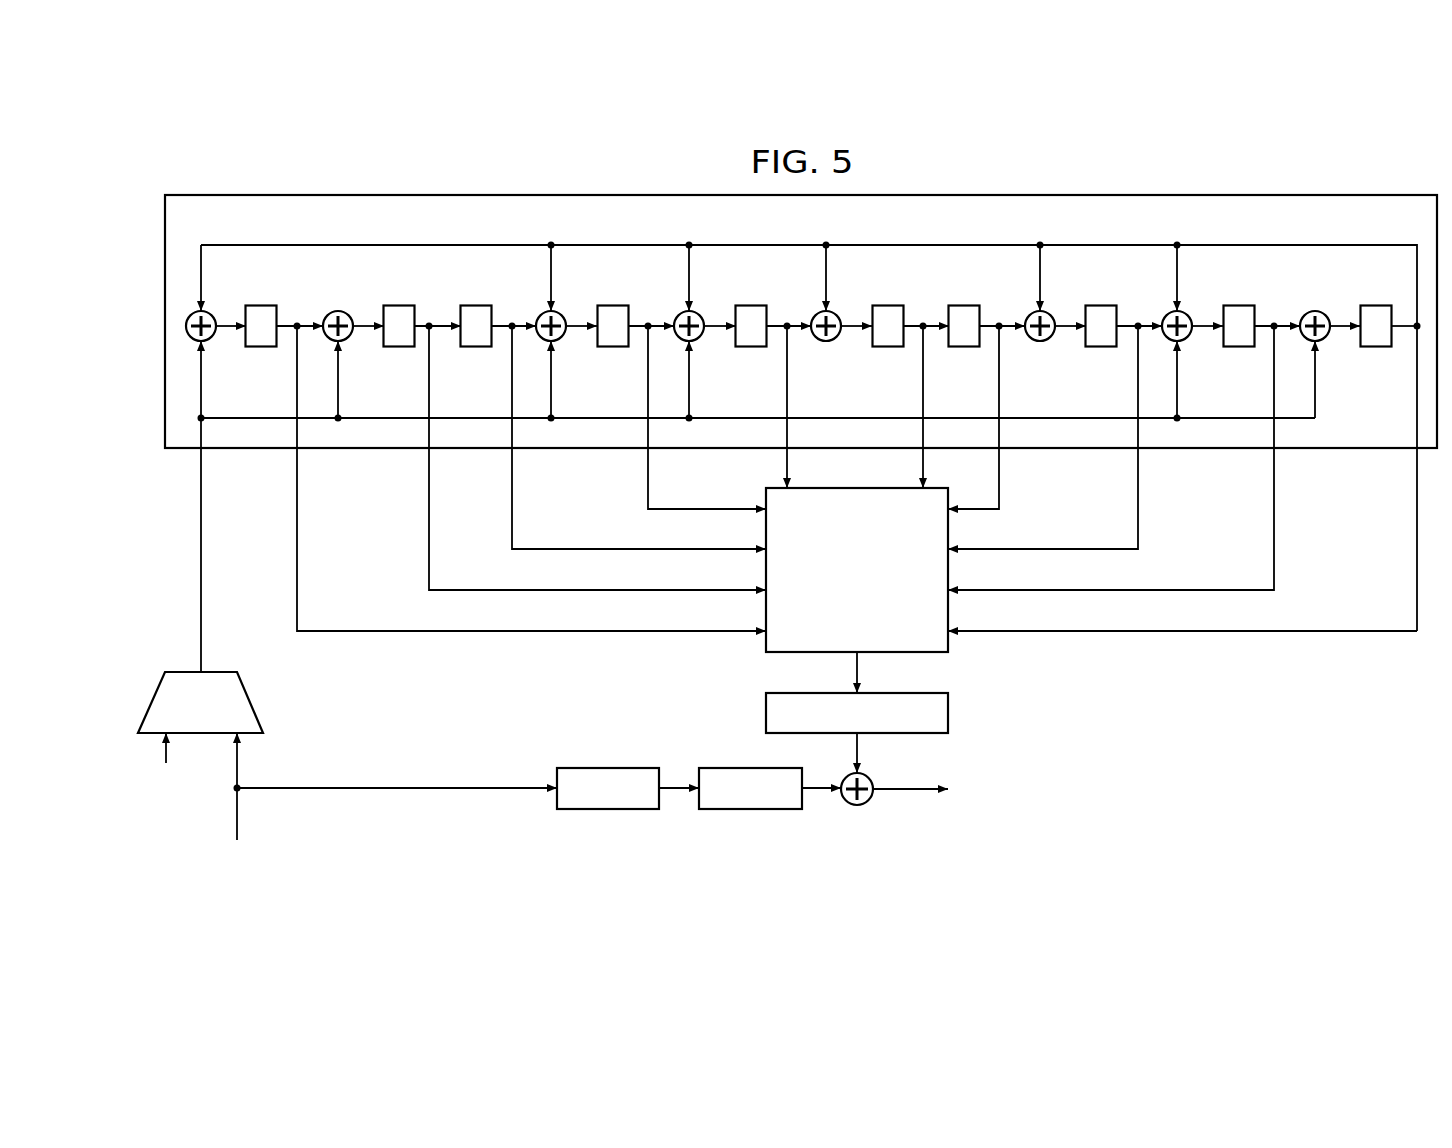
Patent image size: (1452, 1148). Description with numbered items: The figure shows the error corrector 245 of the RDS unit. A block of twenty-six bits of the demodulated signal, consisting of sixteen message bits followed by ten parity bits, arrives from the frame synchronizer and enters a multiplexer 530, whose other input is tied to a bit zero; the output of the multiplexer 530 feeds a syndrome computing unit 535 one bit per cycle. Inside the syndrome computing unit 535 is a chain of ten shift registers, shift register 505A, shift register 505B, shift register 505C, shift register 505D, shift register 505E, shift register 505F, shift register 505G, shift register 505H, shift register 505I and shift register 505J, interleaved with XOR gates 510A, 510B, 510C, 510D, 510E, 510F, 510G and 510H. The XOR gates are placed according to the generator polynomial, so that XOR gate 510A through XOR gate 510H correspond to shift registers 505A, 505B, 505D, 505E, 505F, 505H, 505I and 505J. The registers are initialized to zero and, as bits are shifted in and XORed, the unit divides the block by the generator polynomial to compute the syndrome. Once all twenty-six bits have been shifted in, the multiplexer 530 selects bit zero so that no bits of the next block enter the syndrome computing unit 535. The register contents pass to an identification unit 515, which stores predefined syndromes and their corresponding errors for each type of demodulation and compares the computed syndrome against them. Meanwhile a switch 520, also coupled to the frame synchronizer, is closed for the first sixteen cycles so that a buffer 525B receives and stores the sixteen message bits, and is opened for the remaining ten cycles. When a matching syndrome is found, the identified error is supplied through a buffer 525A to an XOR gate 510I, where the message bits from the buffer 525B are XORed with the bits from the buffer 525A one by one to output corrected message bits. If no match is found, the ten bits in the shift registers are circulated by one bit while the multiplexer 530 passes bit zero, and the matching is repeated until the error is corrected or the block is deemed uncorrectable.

The error corrector 245 is at (265, 172).
The syndrome computing unit 535 is at (1115, 193).
The XOR gate 510A is at (234, 298).
The XOR gate 510B is at (330, 314).
The XOR gate 510C is at (540, 314).
The XOR gate 510D is at (677, 314).
The XOR gate 510E is at (838, 314).
The XOR gate 510F is at (1080, 297).
The XOR gate 510G is at (1215, 297).
The XOR gate 510H is at (1357, 297).
The XOR gate 510I is at (868, 800).
The shift register 505A is at (261, 348).
The shift register 505B is at (399, 348).
The shift register 505C is at (476, 348).
The shift register 505D is at (613, 348).
The shift register 505E is at (751, 348).
The shift register 505F is at (888, 348).
The shift register 505G is at (964, 348).
The shift register 505H is at (1101, 348).
The shift register 505I is at (1239, 348).
The shift register 505J is at (1376, 348).
The identification unit 515 is at (877, 613).
The switch 520 is at (608, 810).
The buffer 525A is at (948, 710).
The buffer 525B is at (750, 810).
The multiplexer 530 is at (252, 703).